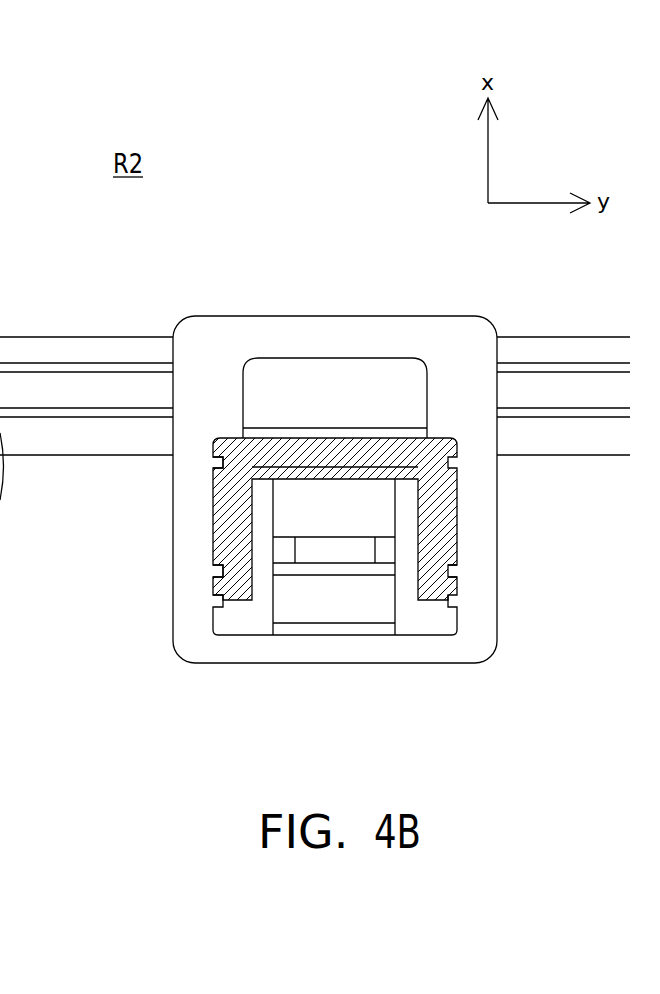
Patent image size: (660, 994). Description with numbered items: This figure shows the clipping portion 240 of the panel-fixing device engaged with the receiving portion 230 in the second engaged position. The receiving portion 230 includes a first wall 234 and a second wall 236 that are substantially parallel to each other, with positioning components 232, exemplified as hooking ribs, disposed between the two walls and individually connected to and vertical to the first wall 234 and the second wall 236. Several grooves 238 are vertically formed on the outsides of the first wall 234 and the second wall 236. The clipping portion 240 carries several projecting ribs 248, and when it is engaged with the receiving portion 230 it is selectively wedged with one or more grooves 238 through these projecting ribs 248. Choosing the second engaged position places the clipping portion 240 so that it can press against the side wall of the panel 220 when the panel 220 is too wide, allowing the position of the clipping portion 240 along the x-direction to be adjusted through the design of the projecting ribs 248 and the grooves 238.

The panel 220 is at (561, 363).
The receiving portion 230 is at (475, 543).
The positioning component 232 is at (338, 439).
The first wall 234 is at (213, 520).
The second wall 236 is at (447, 493).
The groove 238 is at (200, 579).
The clipping portion 240 is at (514, 613).
The projecting rib 248 is at (222, 462).